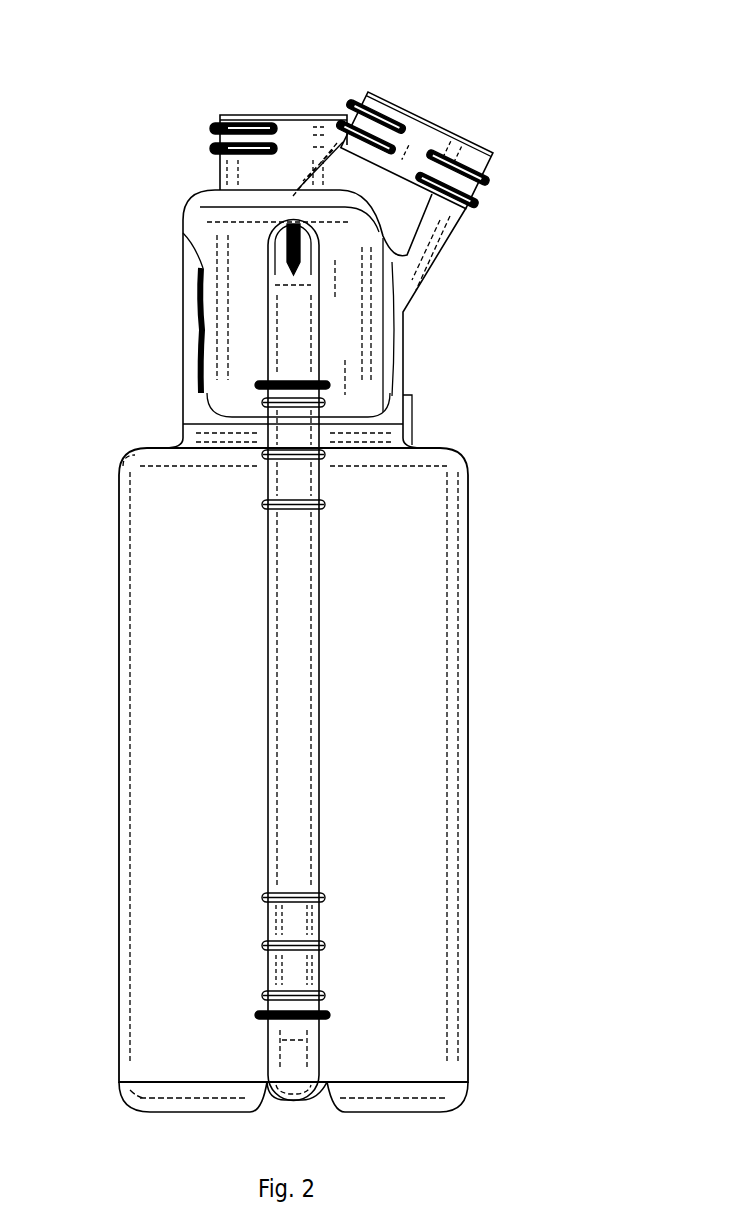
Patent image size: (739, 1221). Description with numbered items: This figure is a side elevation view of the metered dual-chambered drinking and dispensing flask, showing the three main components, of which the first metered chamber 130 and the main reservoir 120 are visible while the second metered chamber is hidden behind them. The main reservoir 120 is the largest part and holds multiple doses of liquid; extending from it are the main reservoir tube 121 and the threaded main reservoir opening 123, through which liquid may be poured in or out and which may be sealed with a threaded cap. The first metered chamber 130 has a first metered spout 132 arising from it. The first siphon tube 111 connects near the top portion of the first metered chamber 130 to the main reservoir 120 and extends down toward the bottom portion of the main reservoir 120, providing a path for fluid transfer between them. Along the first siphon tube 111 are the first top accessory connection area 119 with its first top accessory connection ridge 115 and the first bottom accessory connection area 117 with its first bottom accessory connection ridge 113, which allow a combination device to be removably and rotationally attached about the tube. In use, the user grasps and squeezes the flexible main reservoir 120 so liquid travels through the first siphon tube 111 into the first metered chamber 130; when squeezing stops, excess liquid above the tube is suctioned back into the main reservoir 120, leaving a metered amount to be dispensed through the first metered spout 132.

The first siphon tube 111 is at (313, 768).
The first bottom accessory connection ridge 113 is at (330, 1015).
The first top accessory connection ridge 115 is at (330, 382).
The first bottom accessory connection area 117 is at (362, 950).
The first top accessory connection area 119 is at (402, 452).
The main reservoir 120 is at (228, 751).
The main reservoir tube 121 is at (183, 360).
The main reservoir opening 123 is at (294, 97).
The first metered chamber 130 is at (360, 335).
The first metered spout 132 is at (453, 112).